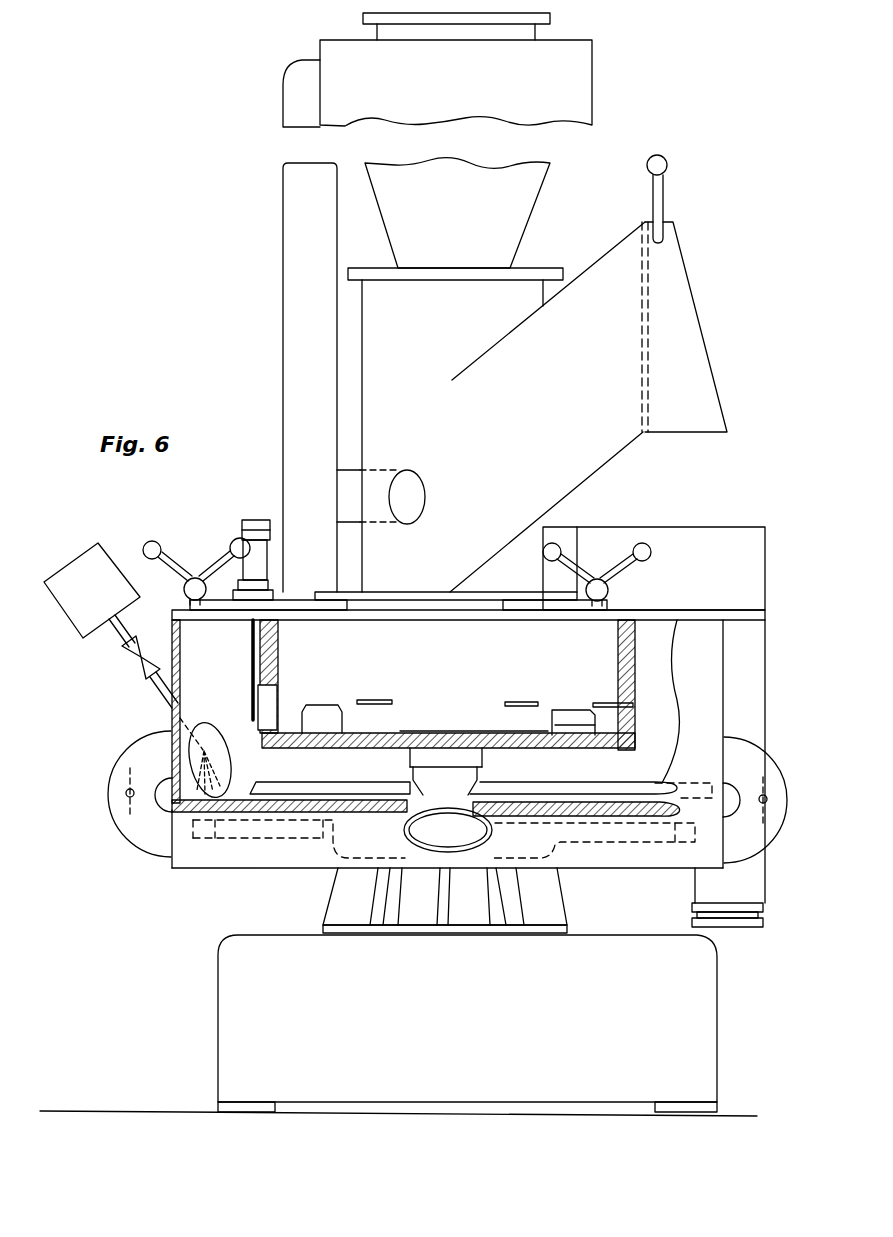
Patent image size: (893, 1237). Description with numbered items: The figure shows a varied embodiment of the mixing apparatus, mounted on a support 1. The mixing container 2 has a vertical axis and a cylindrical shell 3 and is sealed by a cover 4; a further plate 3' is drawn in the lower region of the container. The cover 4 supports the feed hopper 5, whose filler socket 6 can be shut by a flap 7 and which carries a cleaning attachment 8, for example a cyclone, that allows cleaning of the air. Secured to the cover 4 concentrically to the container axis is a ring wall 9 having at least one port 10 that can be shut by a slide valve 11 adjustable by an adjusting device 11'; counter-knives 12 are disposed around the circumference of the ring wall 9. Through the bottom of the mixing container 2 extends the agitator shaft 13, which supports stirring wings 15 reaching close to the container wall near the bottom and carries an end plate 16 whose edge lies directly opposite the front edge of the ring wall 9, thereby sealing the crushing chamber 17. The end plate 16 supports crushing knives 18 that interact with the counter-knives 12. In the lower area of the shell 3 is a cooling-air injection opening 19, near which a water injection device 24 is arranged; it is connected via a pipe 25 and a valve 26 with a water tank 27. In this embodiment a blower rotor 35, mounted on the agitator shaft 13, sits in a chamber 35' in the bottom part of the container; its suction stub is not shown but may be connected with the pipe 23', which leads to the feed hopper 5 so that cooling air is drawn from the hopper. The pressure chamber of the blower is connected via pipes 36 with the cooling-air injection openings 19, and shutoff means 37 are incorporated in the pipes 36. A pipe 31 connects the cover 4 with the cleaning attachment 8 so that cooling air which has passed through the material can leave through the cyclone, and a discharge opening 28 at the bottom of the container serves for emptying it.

The support 1 is at (672, 1033).
The mixing container 2 is at (625, 853).
The cylindrical shell 3 is at (447, 744).
The housing plate 3' is at (575, 788).
The cover 4 is at (238, 613).
The feed hopper 5 is at (560, 451).
The filler socket 6 is at (696, 366).
The flap 7 is at (643, 338).
The cleaning attachment 8 is at (469, 222).
The ring wall 9 is at (647, 667).
The port 10 is at (270, 700).
The slide valve 11 is at (232, 670).
The adjusting device 11' is at (242, 543).
The counter-knives 12 is at (378, 700).
The agitator shaft 13 is at (475, 778).
The stirring wings 15 is at (318, 793).
The end plate 16 is at (385, 745).
The crushing chamber 17 is at (500, 668).
The crushing knives 18 is at (318, 712).
The cooling-air injection opening 19 is at (230, 750).
The pipe 23' is at (381, 472).
The water injection device 24 is at (207, 752).
The pipe 25 is at (170, 692).
The valve 26 is at (124, 670).
The water tank 27 is at (80, 608).
The discharge opening 28 is at (460, 838).
The pipe 31 is at (297, 302).
The blower rotor 35 is at (299, 861).
The chamber 35' is at (602, 849).
The pipes 36 is at (130, 763).
The shutoff means 37 is at (130, 815).